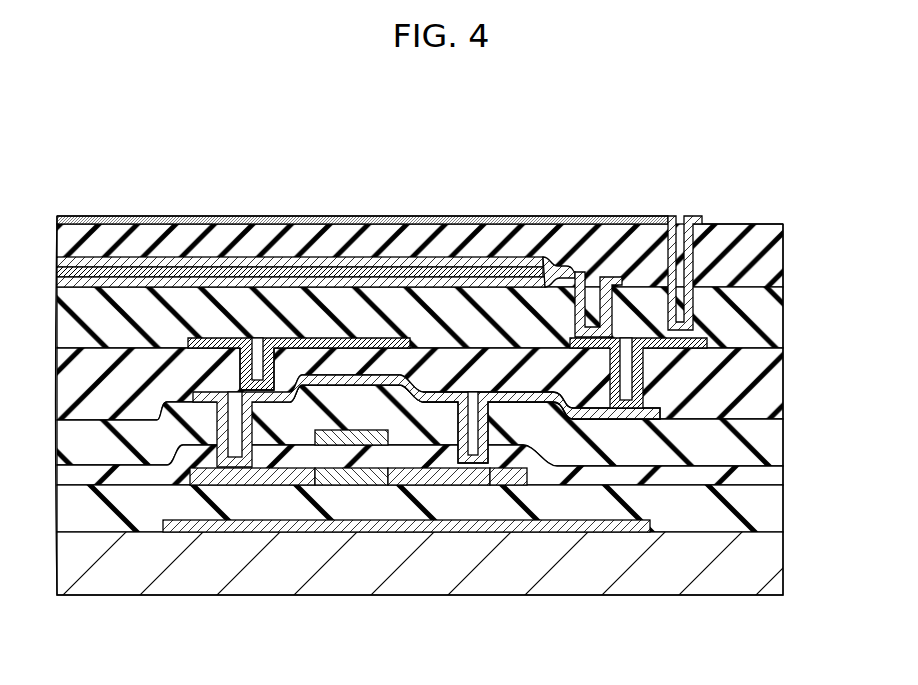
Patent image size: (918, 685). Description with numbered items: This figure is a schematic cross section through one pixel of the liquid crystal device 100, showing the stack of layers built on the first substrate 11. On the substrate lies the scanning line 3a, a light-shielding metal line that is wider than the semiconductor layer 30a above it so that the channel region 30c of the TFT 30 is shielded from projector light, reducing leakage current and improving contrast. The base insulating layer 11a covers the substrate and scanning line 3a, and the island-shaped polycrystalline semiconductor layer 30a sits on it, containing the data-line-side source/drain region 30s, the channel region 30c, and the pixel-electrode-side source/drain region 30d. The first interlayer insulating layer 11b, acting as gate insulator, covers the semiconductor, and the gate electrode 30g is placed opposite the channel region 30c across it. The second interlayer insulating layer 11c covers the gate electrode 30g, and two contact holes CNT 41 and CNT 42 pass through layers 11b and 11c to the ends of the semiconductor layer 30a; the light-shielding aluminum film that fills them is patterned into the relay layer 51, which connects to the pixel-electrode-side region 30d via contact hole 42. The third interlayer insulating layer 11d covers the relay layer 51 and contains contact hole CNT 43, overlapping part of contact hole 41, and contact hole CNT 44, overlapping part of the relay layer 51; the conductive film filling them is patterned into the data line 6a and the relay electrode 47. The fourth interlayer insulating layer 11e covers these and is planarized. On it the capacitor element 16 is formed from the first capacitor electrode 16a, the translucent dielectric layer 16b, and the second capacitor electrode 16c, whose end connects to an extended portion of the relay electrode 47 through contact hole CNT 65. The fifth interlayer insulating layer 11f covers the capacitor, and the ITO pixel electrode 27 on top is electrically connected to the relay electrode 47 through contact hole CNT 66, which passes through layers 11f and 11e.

The liquid crystal device 100 is at (787, 192).
The first substrate 11 is at (788, 562).
The base insulating layer 11a is at (788, 510).
The first interlayer insulating layer 11b is at (788, 476).
The second interlayer insulating layer 11c is at (788, 440).
The third interlayer insulating layer 11d is at (788, 380).
The fourth interlayer insulating layer 11e is at (788, 302).
The fifth interlayer insulating layer 11f is at (788, 248).
The scanning line 3a is at (617, 533).
The data line 6a is at (242, 337).
The capacitor element 16 is at (301, 199).
The first capacitor electrode 16a is at (268, 283).
The dielectric layer 16b is at (330, 267).
The second capacitor electrode 16c is at (246, 148).
The pixel electrode 27 is at (483, 215).
The TFT 30 is at (379, 482).
The data-line-side source/drain region 30s is at (257, 486).
The channel region 30c is at (332, 487).
The gate electrode 30g is at (397, 447).
The pixel-electrode-side source/drain region 30d is at (470, 487).
The semiconductor layer 30a is at (528, 472).
The contact hole CNT 41 is at (246, 417).
The contact hole CNT 42 is at (483, 425).
The contact hole CNT 43 is at (244, 357).
The contact hole CNT 44 is at (634, 375).
The relay electrode 47 is at (704, 330).
The relay layer 51 is at (648, 422).
The contact hole CNT 65 is at (584, 300).
The contact hole CNT 66 is at (672, 215).